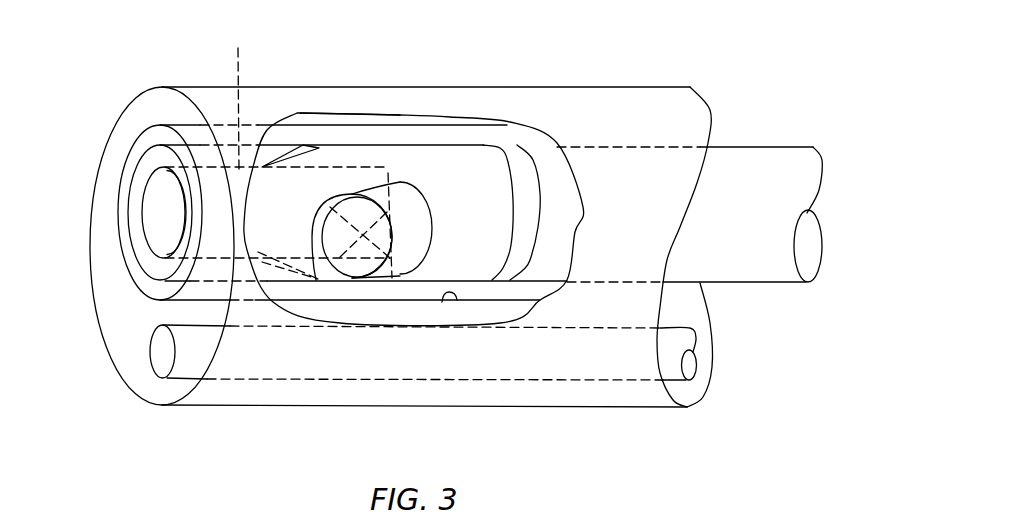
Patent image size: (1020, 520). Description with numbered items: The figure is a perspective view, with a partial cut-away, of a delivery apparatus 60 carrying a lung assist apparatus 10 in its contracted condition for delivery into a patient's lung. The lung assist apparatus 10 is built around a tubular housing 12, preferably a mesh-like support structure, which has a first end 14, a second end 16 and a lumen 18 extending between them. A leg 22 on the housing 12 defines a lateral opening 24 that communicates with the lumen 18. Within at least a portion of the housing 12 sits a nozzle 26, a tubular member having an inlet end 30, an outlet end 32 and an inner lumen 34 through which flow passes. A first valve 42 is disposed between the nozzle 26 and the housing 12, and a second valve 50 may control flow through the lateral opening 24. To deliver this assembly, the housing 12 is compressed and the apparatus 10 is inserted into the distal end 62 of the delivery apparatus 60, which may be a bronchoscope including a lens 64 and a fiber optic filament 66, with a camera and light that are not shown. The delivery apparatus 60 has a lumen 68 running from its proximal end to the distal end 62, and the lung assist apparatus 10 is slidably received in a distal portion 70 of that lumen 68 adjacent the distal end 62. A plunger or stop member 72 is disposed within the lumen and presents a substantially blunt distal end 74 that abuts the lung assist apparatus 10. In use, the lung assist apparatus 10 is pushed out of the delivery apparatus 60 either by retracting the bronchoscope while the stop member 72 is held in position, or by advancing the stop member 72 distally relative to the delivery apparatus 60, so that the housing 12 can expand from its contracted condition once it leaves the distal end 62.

The lung assist apparatus 10 is at (369, 135).
The housing 12 is at (403, 145).
The first end 14 is at (133, 252).
The second end 16 is at (511, 120).
The lumen 18 is at (155, 157).
The leg 22 is at (407, 183).
The lateral opening 24 is at (321, 282).
The nozzle 26 is at (238, 99).
The inlet end 30 is at (142, 218).
The outlet end 32 is at (388, 173).
The inner lumen 34 is at (155, 197).
The first valve 42 is at (300, 145).
The second valve 50 is at (361, 282).
The delivery apparatus 60 is at (575, 80).
The distal end 62 is at (197, 407).
The lens 64 is at (155, 362).
The fiber optic filament 66 is at (682, 382).
The lumen 68 is at (442, 302).
The distal portion 70 is at (133, 278).
The stop member 72 is at (753, 147).
The blunt distal end 74 is at (522, 165).